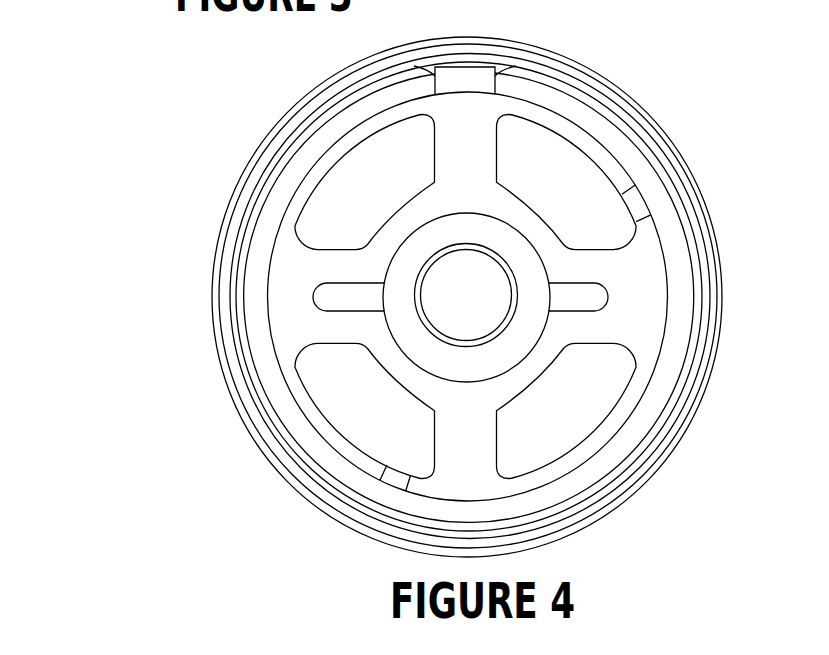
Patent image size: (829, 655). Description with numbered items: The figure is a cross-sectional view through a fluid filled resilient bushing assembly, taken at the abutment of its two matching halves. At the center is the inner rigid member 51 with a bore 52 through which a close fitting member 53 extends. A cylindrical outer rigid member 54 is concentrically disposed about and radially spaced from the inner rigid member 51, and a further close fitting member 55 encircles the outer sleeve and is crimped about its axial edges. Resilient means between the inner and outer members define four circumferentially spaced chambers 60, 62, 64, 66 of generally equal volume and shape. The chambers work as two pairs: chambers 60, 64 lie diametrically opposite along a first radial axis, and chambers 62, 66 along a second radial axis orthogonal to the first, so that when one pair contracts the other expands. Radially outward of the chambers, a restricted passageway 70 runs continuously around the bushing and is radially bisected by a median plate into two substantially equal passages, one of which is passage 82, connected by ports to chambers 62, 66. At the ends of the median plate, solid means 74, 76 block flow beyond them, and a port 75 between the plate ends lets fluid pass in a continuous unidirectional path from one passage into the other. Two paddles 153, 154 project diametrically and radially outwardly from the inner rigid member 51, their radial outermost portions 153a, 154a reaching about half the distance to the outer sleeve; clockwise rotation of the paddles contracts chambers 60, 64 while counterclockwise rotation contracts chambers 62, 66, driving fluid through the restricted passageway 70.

The inner rigid member 51 is at (527, 292).
The bore 52 is at (475, 313).
The close fitting member 53 is at (507, 318).
The outer rigid member 54 is at (240, 202).
The close fitting member 55 is at (333, 511).
The chamber 60 is at (340, 185).
The chamber 62 is at (573, 163).
The chamber 64 is at (582, 398).
The chamber 66 is at (322, 377).
The restricted passageway 70 is at (657, 150).
The solid means 74 is at (500, 72).
The port 75 is at (458, 77).
The solid means 76 is at (414, 66).
The passage 82 is at (663, 203).
The paddle 153 is at (332, 295).
The radial outermost portion 153a is at (313, 302).
The paddle 154 is at (593, 300).
The radial outermost portion 154a is at (610, 294).